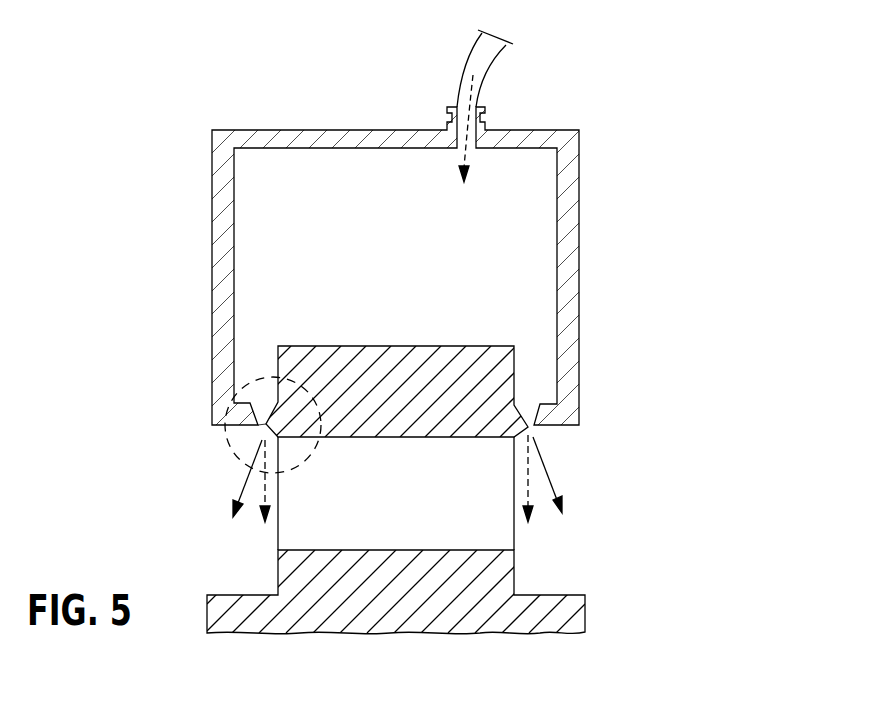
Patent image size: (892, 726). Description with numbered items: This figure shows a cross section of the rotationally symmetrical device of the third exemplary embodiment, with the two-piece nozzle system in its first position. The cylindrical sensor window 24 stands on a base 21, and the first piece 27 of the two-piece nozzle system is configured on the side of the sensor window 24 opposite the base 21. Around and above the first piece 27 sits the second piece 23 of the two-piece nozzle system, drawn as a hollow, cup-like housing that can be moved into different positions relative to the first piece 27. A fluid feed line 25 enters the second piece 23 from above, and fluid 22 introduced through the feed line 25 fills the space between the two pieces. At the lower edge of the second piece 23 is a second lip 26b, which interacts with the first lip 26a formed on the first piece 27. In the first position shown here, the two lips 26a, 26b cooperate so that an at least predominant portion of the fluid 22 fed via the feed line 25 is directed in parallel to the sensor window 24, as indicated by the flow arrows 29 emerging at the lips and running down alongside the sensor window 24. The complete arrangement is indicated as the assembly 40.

The base 21 is at (570, 618).
The fluid 22 is at (546, 467).
The second piece of the two-piece nozzle system 23 is at (568, 174).
The sensor window 24 is at (498, 523).
The feed line 25 is at (455, 101).
The first lip 26a is at (289, 412).
The second lip 26b is at (246, 430).
The first piece of the two-piece nozzle system 27 is at (496, 397).
The flow direction 29 is at (242, 458).
The fluid flow assembly 40 is at (611, 100).